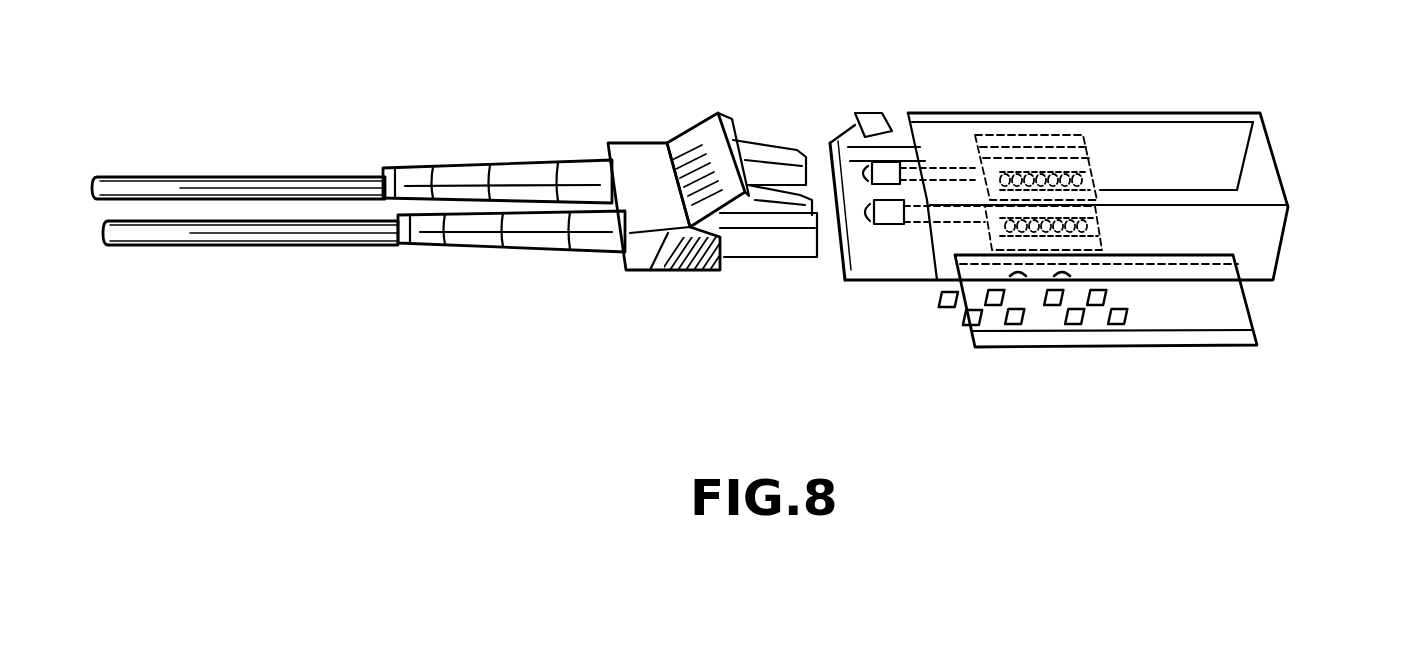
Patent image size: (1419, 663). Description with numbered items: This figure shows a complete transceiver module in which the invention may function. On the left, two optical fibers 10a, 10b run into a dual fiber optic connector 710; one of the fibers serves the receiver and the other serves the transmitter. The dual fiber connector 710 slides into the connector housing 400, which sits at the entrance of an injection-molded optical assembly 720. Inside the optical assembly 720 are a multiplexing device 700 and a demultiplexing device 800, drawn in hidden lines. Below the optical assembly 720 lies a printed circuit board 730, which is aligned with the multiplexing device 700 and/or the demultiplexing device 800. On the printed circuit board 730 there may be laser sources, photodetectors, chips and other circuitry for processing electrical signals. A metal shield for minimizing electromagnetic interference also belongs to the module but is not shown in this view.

The optical fiber 10a is at (236, 166).
The optical fiber 10b is at (238, 260).
The dual fiber optic connector 710 is at (632, 154).
The connector housing 400 is at (828, 110).
The injection-molded optical assembly 720 is at (1270, 76).
The demultiplexing device 800 is at (1100, 166).
The multiplexing device 700 is at (1106, 226).
The printed circuit board 730 is at (966, 316).